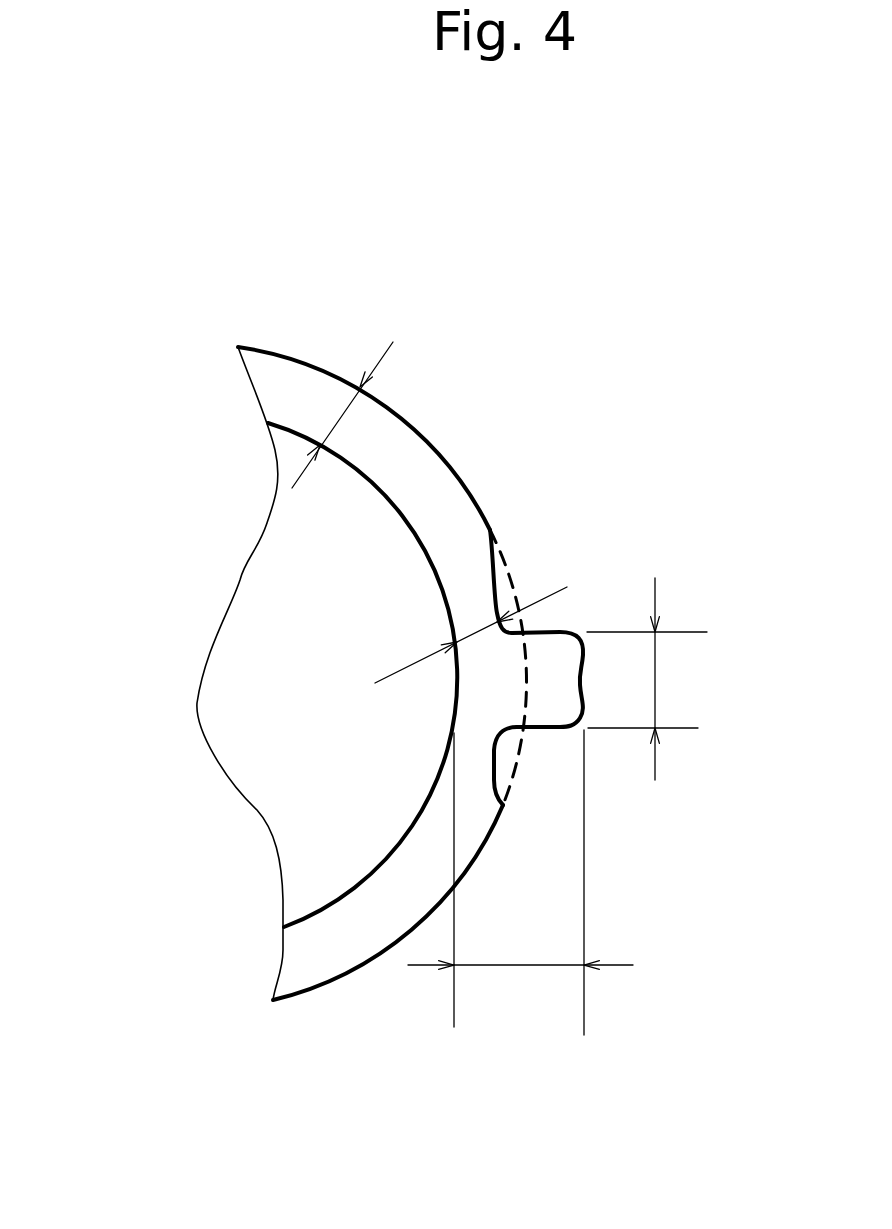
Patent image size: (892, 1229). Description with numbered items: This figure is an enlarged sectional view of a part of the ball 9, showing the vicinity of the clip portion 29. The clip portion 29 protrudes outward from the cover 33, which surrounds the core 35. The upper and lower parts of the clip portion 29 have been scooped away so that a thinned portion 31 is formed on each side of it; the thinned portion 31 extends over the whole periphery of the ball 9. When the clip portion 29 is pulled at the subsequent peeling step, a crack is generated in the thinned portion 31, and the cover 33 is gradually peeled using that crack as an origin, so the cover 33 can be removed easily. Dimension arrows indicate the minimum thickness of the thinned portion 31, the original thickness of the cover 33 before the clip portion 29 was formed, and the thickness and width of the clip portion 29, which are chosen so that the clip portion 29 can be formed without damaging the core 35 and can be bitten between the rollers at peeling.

The ball 9 is at (711, 267).
The clip portion 29 is at (560, 670).
The thinned portion 31 is at (467, 600).
The cover 33 is at (310, 955).
The core 35 is at (270, 742).